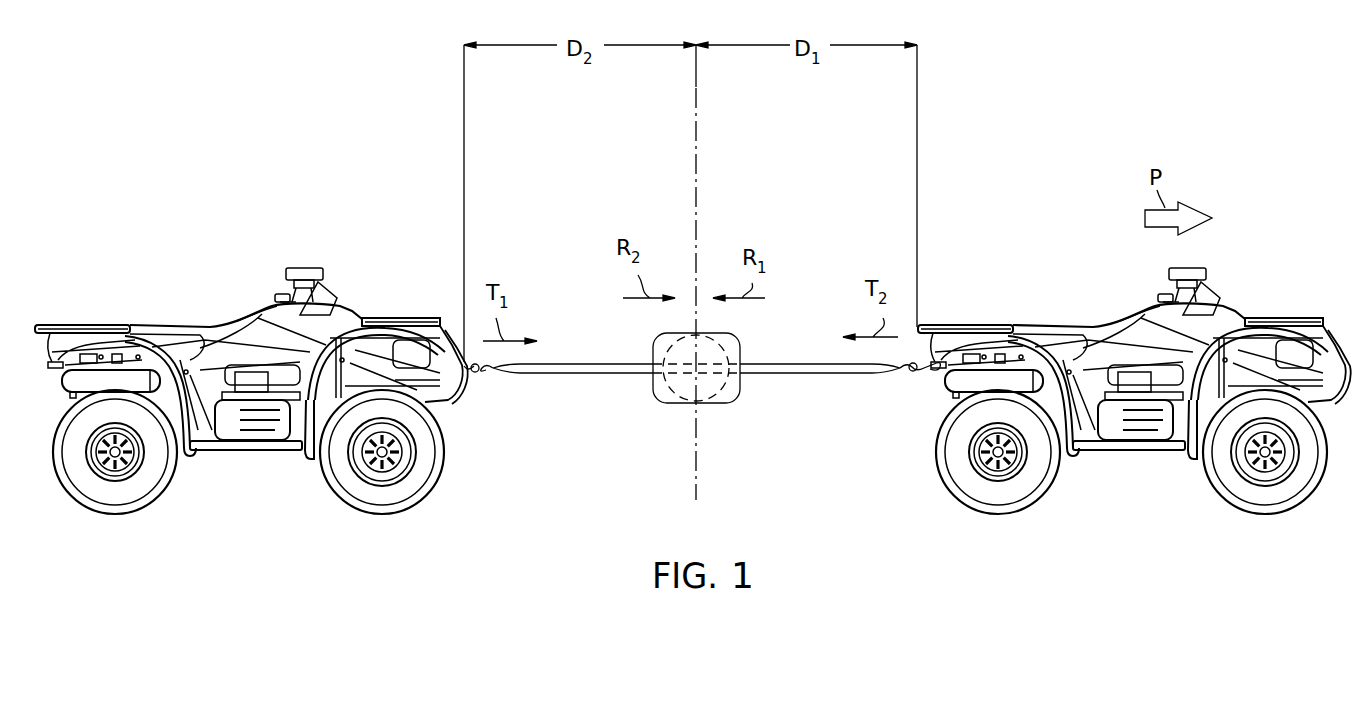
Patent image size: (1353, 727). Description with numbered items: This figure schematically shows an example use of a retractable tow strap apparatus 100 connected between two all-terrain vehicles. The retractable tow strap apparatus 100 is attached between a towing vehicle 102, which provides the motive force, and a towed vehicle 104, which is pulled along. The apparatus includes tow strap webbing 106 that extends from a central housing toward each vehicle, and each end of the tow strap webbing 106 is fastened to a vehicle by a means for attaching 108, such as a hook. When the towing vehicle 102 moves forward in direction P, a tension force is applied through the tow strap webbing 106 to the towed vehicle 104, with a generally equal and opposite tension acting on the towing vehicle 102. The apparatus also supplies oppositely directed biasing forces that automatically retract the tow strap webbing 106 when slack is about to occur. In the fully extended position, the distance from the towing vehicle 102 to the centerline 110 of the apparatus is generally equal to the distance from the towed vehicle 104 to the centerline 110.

The retractable tow strap apparatus 100 is at (660, 418).
The towing vehicle 102 is at (1053, 328).
The towed vehicle 104 is at (176, 328).
The tow strap webbing 106 is at (545, 375).
The means for attaching 108 is at (475, 377).
The centerline 110 is at (697, 148).